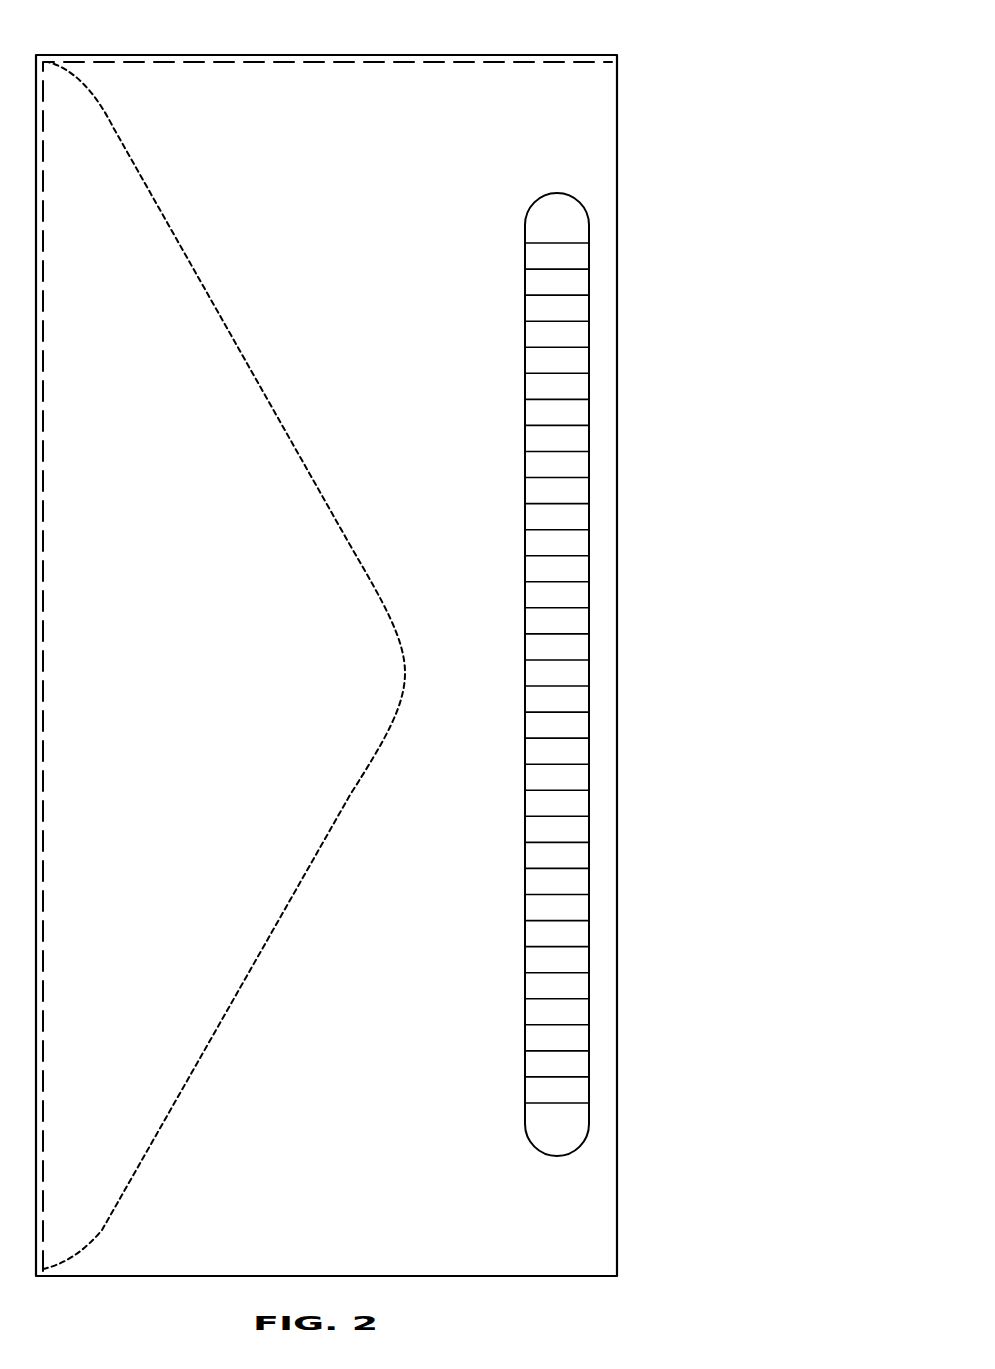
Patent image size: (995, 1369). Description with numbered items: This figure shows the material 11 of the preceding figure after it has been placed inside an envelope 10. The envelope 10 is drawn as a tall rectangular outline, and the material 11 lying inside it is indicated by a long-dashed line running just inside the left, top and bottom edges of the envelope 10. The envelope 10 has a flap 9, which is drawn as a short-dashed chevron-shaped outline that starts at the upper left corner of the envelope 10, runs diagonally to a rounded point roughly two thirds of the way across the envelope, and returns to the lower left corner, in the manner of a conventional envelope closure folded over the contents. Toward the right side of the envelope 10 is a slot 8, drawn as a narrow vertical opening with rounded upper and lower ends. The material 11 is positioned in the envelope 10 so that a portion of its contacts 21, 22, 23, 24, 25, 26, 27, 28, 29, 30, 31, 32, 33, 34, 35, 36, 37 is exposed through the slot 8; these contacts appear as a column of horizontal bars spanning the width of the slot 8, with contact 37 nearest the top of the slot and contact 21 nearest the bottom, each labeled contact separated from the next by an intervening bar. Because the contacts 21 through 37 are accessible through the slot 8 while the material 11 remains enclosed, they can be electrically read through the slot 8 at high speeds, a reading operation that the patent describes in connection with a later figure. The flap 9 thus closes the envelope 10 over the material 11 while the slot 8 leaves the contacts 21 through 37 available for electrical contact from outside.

The slot 8 is at (541, 197).
The flap 9 is at (232, 332).
The envelope 10 is at (617, 125).
The material 11 is at (149, 62).
The contact 21 is at (562, 1077).
The contact 22 is at (562, 1025).
The contact 23 is at (562, 973).
The contact 24 is at (562, 921).
The contact 25 is at (562, 868).
The contact 26 is at (562, 816).
The contact 27 is at (562, 764).
The contact 28 is at (562, 712).
The contact 29 is at (562, 660).
The contact 30 is at (562, 608).
The contact 31 is at (562, 556).
The contact 32 is at (562, 504).
The contact 33 is at (562, 452).
The contact 34 is at (562, 399).
The contact 35 is at (562, 347).
The contact 36 is at (562, 295).
The contact 37 is at (562, 243).